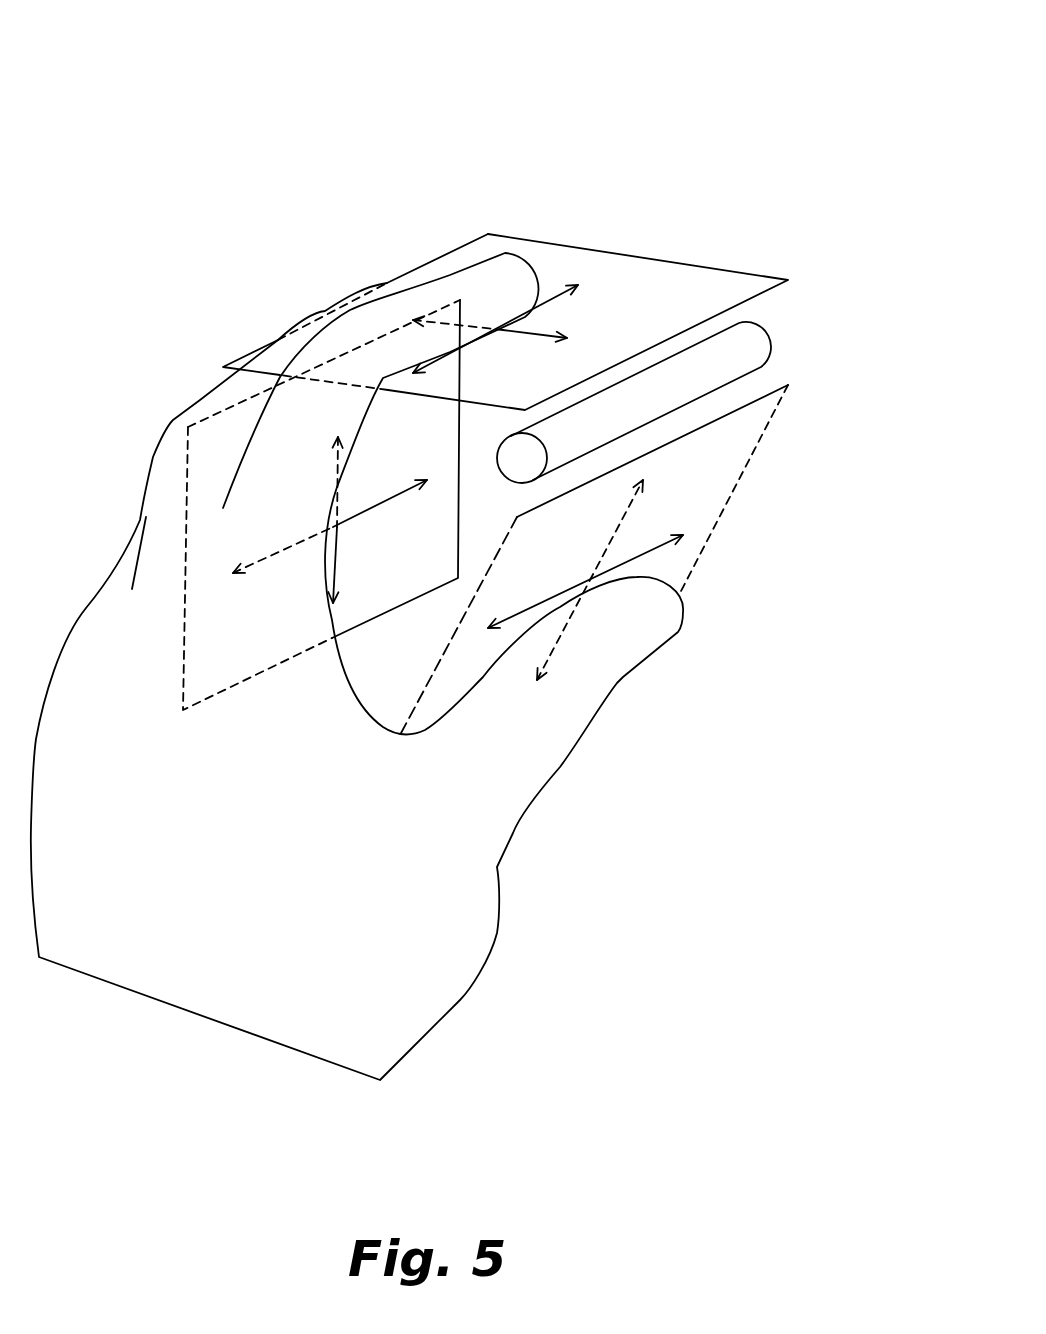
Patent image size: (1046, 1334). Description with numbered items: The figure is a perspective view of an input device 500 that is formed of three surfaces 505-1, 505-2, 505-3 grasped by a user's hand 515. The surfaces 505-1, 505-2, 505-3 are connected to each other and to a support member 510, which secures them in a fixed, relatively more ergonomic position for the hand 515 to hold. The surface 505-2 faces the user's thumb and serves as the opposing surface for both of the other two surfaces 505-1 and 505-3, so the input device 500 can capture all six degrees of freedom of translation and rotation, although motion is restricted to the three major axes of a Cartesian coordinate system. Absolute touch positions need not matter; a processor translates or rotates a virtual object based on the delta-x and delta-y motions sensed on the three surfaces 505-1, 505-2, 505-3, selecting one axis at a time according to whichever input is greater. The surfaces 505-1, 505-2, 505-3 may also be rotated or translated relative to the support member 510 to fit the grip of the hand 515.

The input device 500 is at (180, 108).
The first surface 505-1 is at (598, 280).
The second surface 505-2 is at (677, 490).
The third surface 505-3 is at (223, 455).
The support member 510 is at (730, 365).
The user's hand 515 is at (423, 957).